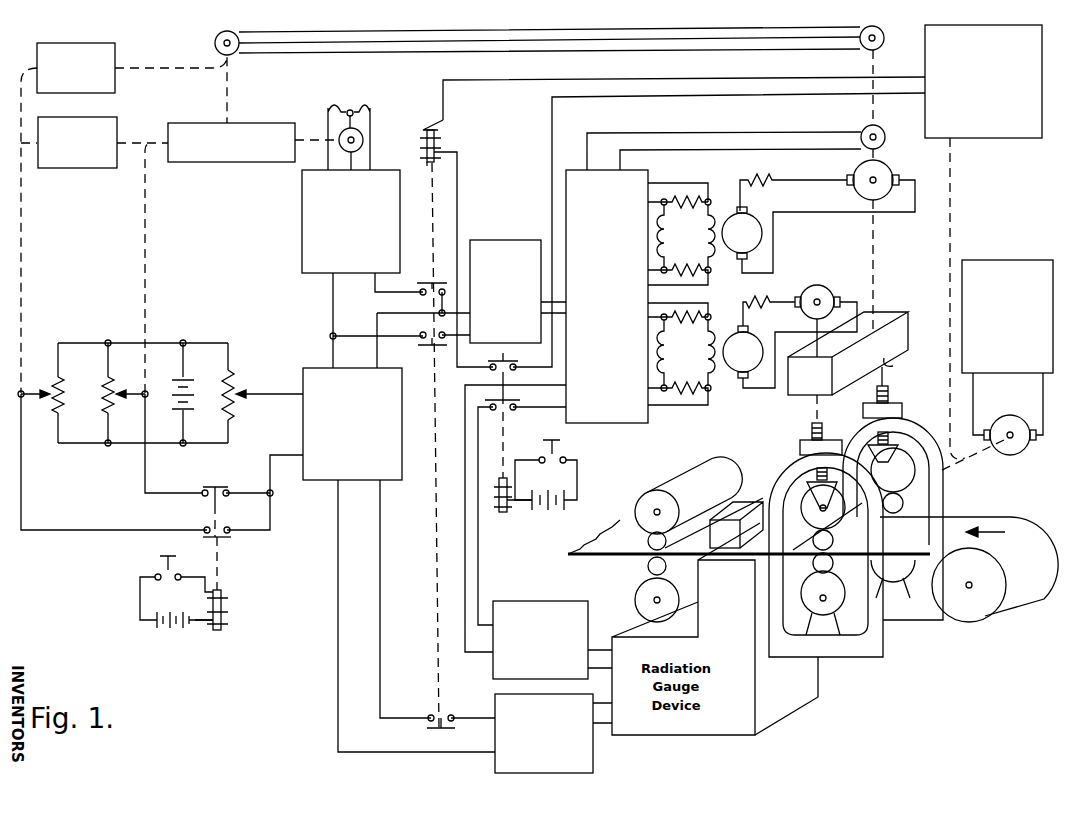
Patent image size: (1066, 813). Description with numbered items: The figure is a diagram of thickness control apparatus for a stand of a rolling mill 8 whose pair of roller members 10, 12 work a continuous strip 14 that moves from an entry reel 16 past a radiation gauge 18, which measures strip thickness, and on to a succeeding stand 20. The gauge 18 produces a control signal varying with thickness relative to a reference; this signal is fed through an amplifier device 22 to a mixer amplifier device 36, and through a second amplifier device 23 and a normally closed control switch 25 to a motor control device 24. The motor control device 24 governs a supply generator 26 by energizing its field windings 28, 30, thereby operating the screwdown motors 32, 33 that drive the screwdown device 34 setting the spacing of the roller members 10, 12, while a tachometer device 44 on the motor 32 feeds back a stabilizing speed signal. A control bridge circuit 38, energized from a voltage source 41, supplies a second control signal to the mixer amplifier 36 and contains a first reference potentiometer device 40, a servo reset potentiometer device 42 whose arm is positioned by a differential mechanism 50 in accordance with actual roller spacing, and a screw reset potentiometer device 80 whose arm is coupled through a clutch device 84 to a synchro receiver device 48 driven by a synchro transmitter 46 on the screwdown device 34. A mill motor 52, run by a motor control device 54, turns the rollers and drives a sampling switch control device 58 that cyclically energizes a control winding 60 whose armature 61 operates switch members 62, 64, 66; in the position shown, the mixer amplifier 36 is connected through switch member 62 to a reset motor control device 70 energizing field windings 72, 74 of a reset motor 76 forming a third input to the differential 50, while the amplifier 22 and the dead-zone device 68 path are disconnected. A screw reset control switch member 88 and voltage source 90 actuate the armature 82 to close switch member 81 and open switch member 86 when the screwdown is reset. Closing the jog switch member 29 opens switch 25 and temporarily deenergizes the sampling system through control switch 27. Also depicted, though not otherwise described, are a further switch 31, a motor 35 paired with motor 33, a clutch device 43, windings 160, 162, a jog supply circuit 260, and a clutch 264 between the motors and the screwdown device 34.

The rolling mill 8 is at (918, 646).
The roller member 10 is at (812, 540).
The roller member 12 is at (813, 566).
The continuous strip 14 is at (965, 517).
The entry reel 16 is at (985, 610).
The radiation gauge 18 is at (762, 497).
The succeeding stand 20 is at (660, 478).
The amplifier device 22 is at (495, 694).
The amplifier device 23 is at (505, 601).
The motor control device 24 is at (582, 170).
The control switch 25 is at (510, 412).
The supply generator 26 is at (752, 212).
The control switch 27 is at (499, 511).
The field winding 28 is at (670, 230).
The jog control switch member 29 is at (556, 465).
The field winding 30 is at (705, 236).
The switch 31 is at (491, 371).
The screwdown motor 32 is at (856, 170).
The screwdown motor 33 is at (820, 287).
The screwdown device 34 is at (848, 417).
The motor 35 is at (750, 328).
The mixer amplifier device 36 is at (318, 368).
The control bridge circuit 38 is at (90, 339).
The first reference potentiometer device 40 is at (237, 380).
The voltage source 41 is at (188, 378).
The servo reset potentiometer device 42 is at (112, 378).
The clutch device 43 is at (110, 117).
The tachometer device 44 is at (866, 125).
The synchro transmitter device 46 is at (880, 28).
The synchro receiver device 48 is at (225, 33).
The differential mechanism 50 is at (205, 123).
The mill motor 52 is at (1018, 416).
The motor control device 54 is at (1034, 260).
The sampling switch control device 58 is at (975, 25).
The control winding 60 is at (440, 141).
The armature 61 is at (420, 160).
The switch member 62 is at (420, 294).
The switch member 64 is at (421, 331).
The switch member 66 is at (431, 716).
The dead-zone device 68 is at (483, 240).
The reset motor control device 70 is at (302, 187).
The field winding 72 is at (366, 108).
The field winding 74 is at (332, 108).
The reset motor 76 is at (364, 140).
The screw reset potentiometer device 80 is at (64, 378).
The switch member 81 is at (204, 527).
The screw reset control armature 82 is at (226, 602).
The clutch device 84 is at (106, 43).
The second switch member 86 is at (218, 500).
The screw reset control switch member 88 is at (163, 582).
The voltage source 90 is at (160, 632).
The resistor 160 is at (679, 344).
The coil 162 is at (681, 362).
The battery circuit 260 is at (620, 488).
The clutch 264 is at (878, 320).